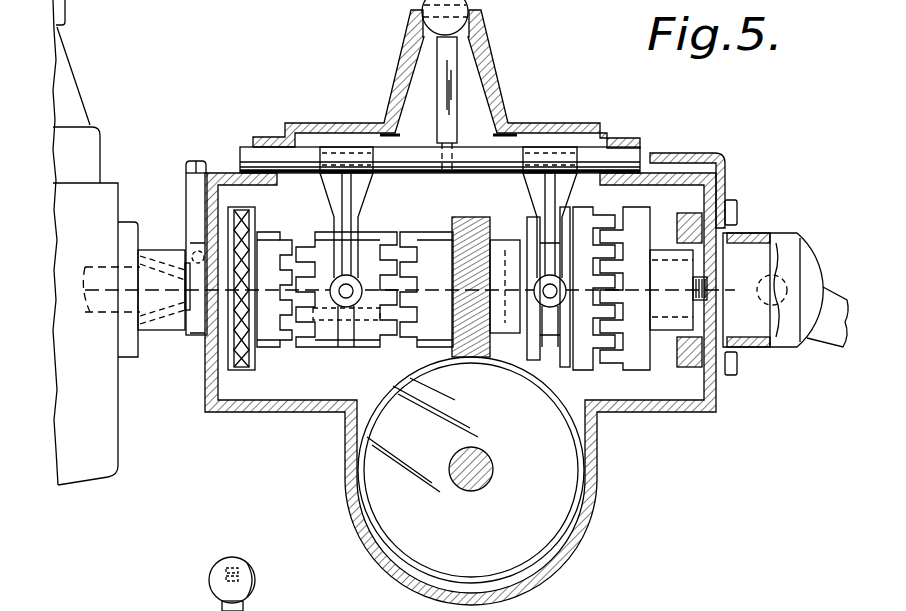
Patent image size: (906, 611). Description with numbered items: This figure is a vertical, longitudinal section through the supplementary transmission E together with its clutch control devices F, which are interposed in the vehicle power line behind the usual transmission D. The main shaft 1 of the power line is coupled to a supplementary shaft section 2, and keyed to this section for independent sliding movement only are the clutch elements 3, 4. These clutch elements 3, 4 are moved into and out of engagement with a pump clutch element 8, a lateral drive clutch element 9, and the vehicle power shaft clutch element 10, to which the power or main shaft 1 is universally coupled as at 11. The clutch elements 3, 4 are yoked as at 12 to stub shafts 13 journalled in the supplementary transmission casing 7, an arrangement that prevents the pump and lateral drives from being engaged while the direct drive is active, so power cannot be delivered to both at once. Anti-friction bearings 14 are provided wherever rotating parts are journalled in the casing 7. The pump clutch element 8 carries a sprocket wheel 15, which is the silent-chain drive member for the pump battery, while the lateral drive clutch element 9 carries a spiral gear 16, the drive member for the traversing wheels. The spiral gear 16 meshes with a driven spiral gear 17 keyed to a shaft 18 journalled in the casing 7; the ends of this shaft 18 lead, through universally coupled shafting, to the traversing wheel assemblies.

The main shaft 1 is at (833, 342).
The supplementary shaft section 2 is at (305, 340).
The clutch element 3 is at (326, 342).
The clutch element 4 is at (562, 364).
The supplementary transmission casing 7 is at (516, 114).
The pump clutch element 8 is at (256, 413).
The lateral drive clutch element 9 is at (415, 346).
The vehicle power shaft clutch element 10 is at (632, 372).
The universal coupling 11 is at (790, 347).
The yoke 12 is at (326, 198).
The stub shaft 13 is at (272, 150).
The anti-friction bearing 14 is at (200, 250).
The sprocket wheel 15 is at (216, 412).
The spiral gear 16 is at (468, 216).
The driven spiral gear 17 is at (533, 546).
The shaft 18 is at (478, 488).
The transmission D is at (88, 219).
The supplementary transmission E is at (498, 68).
The clutch control devices F is at (400, 208).